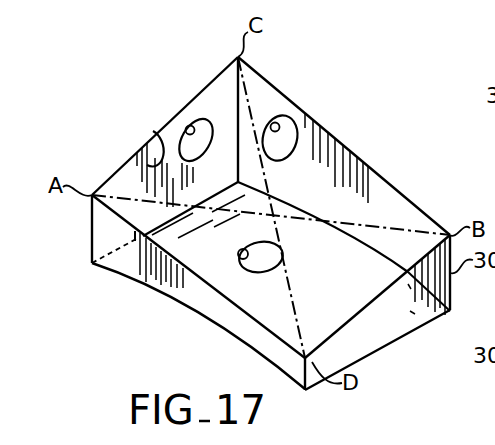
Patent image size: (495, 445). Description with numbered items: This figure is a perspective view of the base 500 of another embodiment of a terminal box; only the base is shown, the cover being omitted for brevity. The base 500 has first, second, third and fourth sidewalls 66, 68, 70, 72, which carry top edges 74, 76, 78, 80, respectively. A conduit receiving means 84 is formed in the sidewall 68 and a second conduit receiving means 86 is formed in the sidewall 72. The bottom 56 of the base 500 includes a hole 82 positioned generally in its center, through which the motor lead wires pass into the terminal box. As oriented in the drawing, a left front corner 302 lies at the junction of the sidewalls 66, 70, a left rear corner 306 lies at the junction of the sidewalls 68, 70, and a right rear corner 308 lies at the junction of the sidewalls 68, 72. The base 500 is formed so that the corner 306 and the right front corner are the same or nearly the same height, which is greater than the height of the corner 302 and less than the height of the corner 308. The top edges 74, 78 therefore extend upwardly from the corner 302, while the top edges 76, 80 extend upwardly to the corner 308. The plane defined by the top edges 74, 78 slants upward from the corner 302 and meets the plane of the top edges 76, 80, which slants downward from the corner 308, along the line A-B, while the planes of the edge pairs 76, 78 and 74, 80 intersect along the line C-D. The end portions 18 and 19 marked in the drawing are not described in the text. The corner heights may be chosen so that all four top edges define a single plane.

The right end portion 18 is at (405, 355).
The left end portion 19 is at (178, 325).
The bottom 56 is at (260, 313).
The first sidewall 66 is at (410, 309).
The second sidewall 68 is at (155, 135).
The third sidewall 70 is at (151, 279).
The fourth sidewall 72 is at (389, 203).
The top edge 74 is at (349, 325).
The top edge 76 is at (207, 86).
The top edge 78 is at (240, 310).
The top edge 80 is at (378, 178).
The hole 82 is at (239, 250).
The conduit receiving means 84 is at (190, 125).
The conduit receiving means 86 is at (277, 123).
The left front corner 302 is at (309, 375).
The left rear corner 306 is at (92, 238).
The right rear corner 308 is at (233, 91).
The base 500 is at (446, 204).